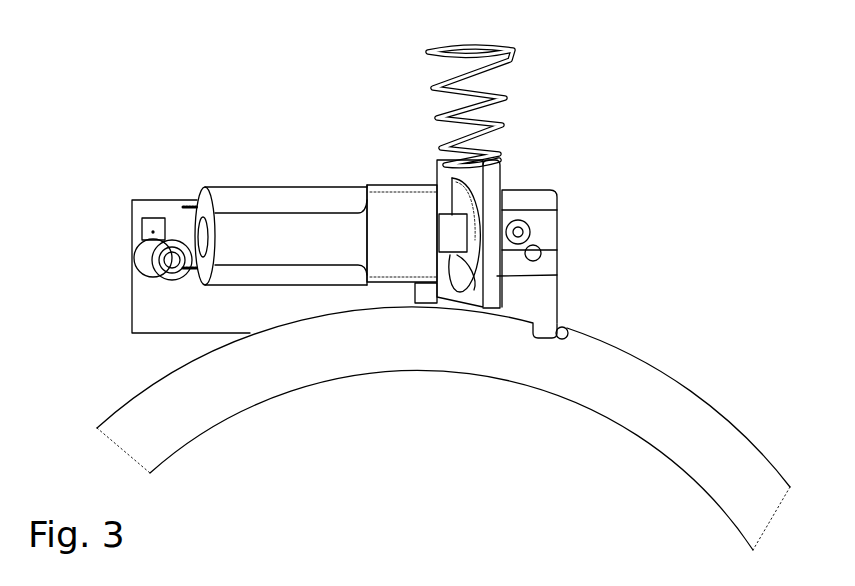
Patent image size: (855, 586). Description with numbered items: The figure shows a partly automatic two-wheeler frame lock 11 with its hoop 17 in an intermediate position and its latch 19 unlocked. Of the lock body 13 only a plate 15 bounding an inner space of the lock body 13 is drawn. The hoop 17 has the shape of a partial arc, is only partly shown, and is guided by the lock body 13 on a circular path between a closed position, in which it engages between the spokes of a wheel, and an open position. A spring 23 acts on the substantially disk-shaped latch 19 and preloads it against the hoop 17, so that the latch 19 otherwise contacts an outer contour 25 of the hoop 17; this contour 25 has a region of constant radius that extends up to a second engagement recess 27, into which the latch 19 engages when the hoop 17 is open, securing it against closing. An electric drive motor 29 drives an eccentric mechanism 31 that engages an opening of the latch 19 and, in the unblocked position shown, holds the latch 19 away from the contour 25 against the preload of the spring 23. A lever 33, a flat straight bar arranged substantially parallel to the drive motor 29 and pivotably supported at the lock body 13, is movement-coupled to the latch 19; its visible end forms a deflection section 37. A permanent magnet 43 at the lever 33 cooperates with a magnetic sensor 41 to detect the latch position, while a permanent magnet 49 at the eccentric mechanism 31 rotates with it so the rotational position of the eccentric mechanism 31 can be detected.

The frame lock 11 is at (650, 148).
The lock body 13 is at (557, 220).
The plate 15 is at (548, 203).
The hoop 17 is at (655, 386).
The latch 19 is at (497, 278).
The spring 23 is at (433, 90).
The outer contour 25 is at (150, 385).
The second engagement recess 27 is at (565, 328).
The drive motor 29 is at (306, 200).
The eccentric mechanism 31 is at (455, 205).
The lever 33 is at (190, 237).
The deflection section 37 is at (143, 250).
The magnetic sensor 41 is at (153, 218).
The permanent magnet 43 is at (168, 262).
The permanent magnet 49 is at (515, 228).